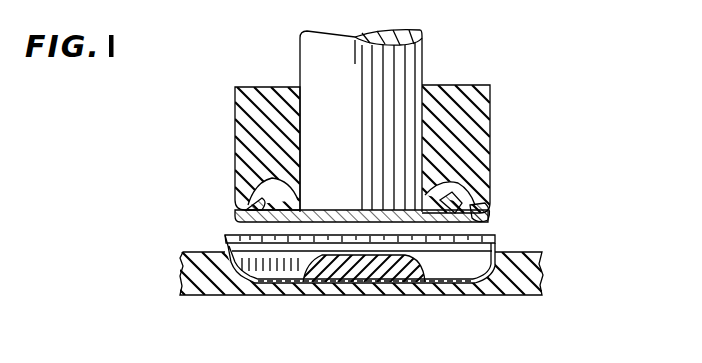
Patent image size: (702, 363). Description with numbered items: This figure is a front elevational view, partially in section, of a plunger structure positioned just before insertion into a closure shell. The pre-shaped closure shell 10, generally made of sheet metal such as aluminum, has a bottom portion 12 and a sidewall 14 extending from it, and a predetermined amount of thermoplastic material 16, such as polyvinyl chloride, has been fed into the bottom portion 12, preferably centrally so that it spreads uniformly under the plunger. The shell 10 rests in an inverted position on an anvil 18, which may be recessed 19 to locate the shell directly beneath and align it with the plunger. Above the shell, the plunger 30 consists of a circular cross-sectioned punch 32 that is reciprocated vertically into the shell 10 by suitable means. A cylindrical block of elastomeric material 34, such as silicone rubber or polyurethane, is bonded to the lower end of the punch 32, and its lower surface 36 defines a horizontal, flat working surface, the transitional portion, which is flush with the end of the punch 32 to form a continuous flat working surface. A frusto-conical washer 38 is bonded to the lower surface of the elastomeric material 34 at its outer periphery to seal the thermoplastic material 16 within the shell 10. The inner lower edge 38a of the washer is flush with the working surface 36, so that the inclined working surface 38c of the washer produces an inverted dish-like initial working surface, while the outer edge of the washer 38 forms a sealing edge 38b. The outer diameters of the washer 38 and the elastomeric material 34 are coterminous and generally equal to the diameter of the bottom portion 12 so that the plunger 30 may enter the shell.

The closure shell 10 is at (418, 279).
The bottom portion 12 is at (403, 285).
The sidewall 14 is at (500, 266).
The thermoplastic material 16 is at (355, 286).
The anvil 18 is at (523, 279).
The recess 19 is at (445, 285).
The plunger 30 is at (483, 132).
The punch 32 is at (349, 113).
The elastomeric block 34 is at (466, 148).
The lower surface 36 is at (262, 177).
The washer 38 is at (496, 238).
The inner lower edge 38a is at (450, 205).
The sealing edge 38b is at (486, 219).
The inclined working surface 38c is at (244, 216).